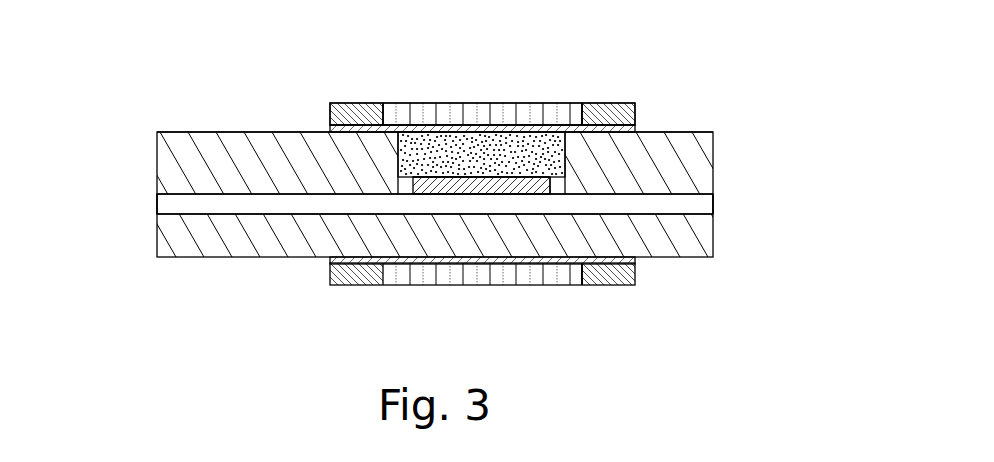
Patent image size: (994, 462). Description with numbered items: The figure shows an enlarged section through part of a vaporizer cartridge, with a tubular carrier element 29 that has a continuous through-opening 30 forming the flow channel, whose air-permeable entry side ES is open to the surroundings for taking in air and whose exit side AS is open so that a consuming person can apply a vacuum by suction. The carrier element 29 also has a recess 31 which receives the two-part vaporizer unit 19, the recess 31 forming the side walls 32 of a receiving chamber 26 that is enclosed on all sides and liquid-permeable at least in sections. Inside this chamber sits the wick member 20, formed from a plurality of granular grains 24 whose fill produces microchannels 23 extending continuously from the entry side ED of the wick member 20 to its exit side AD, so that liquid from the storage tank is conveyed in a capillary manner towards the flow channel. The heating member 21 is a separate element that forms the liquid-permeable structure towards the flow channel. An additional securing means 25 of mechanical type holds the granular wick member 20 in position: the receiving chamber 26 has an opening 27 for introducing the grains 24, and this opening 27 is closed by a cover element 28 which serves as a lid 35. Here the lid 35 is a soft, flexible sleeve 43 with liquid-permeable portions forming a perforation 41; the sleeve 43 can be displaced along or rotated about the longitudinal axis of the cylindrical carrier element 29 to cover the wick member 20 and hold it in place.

The vaporizer unit 19 is at (715, 103).
The wick member 20 is at (458, 145).
The heating member 21 is at (423, 183).
The microchannels 23 is at (533, 183).
The granular grains 24 is at (458, 180).
The securing means 25 is at (648, 106).
The receiving chamber 26 is at (570, 139).
The opening 27 is at (418, 127).
The cover element 28 is at (362, 106).
The carrier element 29 is at (713, 147).
The through-opening 30 is at (680, 208).
The recess 31 is at (592, 270).
The side walls 32 is at (396, 163).
The lid 35 is at (356, 62).
The perforation 41 is at (530, 107).
The sleeve 43 is at (601, 90).
The entry side of the wick member ED is at (487, 128).
The entry side of the flow channel ES is at (167, 202).
The exit side of the wick member AD is at (496, 194).
The exit side of the flow channel AS is at (713, 202).